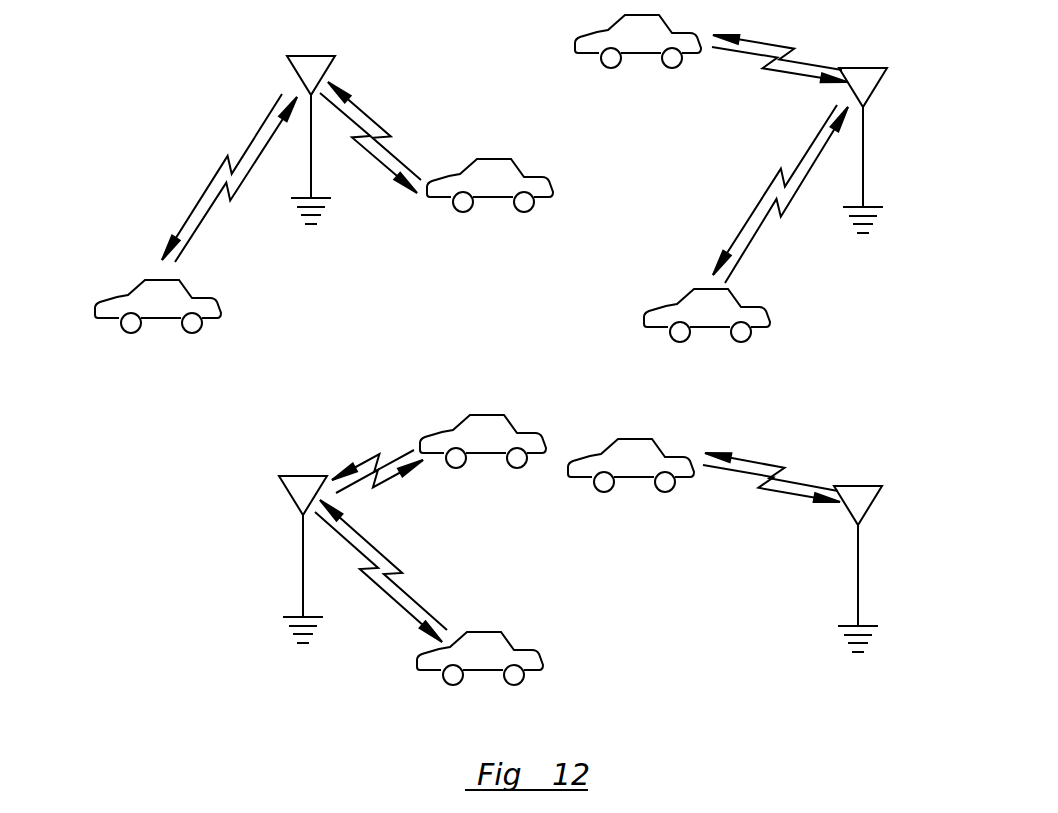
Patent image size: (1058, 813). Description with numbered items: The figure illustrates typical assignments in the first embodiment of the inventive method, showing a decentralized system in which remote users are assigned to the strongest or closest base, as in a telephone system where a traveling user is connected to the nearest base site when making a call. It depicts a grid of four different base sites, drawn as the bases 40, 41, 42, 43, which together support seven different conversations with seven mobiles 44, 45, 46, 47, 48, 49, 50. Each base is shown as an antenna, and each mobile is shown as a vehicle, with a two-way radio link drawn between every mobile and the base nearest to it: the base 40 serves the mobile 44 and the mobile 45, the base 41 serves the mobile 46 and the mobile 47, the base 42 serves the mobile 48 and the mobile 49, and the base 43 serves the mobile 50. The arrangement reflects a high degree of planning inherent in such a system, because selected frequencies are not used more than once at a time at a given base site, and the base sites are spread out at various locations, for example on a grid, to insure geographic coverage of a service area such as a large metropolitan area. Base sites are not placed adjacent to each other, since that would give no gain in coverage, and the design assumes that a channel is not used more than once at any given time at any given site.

The base 40 is at (310, 170).
The base 41 is at (862, 181).
The base 42 is at (302, 591).
The base 43 is at (857, 599).
The mobile 44 is at (161, 318).
The mobile 45 is at (493, 197).
The mobile 46 is at (642, 53).
The mobile 47 is at (714, 327).
The mobile 48 is at (488, 453).
The mobile 49 is at (485, 670).
The mobile 50 is at (635, 477).